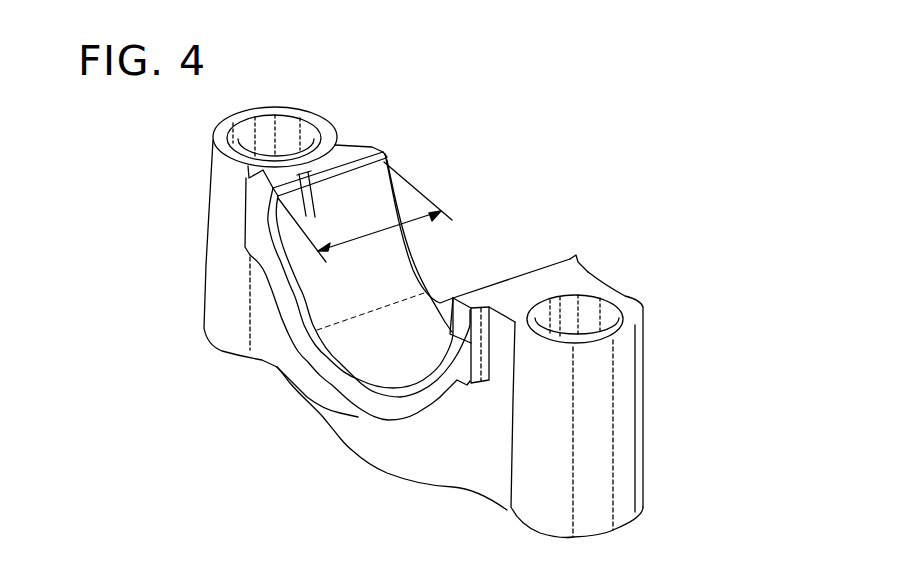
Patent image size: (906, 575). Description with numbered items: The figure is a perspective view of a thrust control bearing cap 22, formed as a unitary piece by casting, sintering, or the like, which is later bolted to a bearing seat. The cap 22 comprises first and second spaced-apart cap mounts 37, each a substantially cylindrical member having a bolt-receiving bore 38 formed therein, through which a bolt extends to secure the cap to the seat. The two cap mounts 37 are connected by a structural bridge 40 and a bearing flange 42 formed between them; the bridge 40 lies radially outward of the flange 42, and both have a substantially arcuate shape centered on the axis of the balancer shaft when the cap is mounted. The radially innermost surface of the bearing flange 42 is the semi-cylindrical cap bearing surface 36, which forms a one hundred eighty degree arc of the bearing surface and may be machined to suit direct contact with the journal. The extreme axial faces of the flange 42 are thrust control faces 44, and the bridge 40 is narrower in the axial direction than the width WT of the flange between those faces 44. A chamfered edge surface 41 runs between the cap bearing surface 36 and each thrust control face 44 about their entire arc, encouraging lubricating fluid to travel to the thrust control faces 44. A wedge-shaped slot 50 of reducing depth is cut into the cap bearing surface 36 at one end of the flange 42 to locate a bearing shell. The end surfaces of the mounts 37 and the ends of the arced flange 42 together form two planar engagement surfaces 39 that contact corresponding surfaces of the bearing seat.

The thrust control bearing cap 22 is at (422, 303).
The cap bearing surface 36 is at (370, 210).
The cap mounts 37 is at (223, 242).
The bolt-receiving bores 38 is at (243, 143).
The planar engagement surfaces 39 is at (353, 153).
The structural bridge 40 is at (373, 443).
The chamfered edge surface 41 is at (318, 338).
The bearing flange 42 is at (280, 315).
The thrust control faces 44 is at (415, 270).
The wedge-shaped slot 50 is at (308, 215).